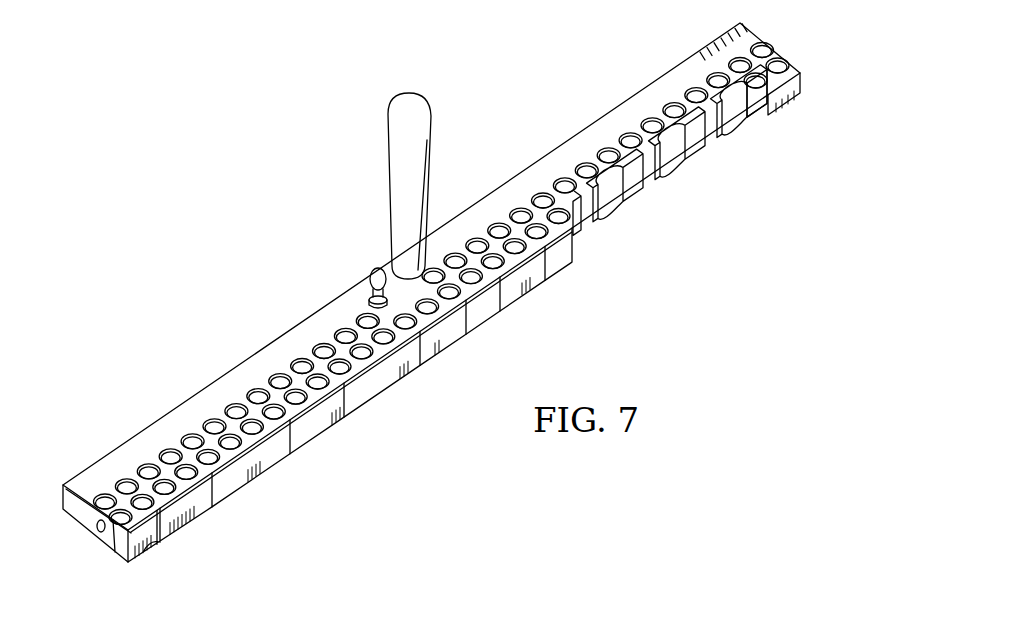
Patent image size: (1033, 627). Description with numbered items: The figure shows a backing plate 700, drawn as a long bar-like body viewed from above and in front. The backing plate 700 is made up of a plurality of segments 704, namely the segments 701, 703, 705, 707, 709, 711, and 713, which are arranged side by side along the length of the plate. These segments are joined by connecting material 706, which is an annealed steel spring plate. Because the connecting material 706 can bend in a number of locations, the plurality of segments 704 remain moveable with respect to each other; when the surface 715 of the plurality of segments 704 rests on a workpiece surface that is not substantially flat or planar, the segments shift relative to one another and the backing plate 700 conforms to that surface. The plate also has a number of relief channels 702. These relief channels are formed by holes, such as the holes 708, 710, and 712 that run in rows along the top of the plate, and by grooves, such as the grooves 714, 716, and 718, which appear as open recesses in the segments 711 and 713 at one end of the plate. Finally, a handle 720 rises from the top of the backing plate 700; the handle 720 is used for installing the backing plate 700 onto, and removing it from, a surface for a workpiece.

The backing plate 700 is at (285, 212).
The segment 701 is at (184, 520).
The number of relief channels 702 is at (252, 378).
The segment 703 is at (255, 468).
The plurality of segments 704 is at (372, 410).
The segment 705 is at (318, 425).
The connecting material 706 is at (168, 416).
The segment 707 is at (423, 360).
The hole 708 is at (488, 247).
The segment 709 is at (482, 312).
The hole 710 is at (533, 252).
The segment 711 is at (690, 150).
The hole 712 is at (665, 118).
The segment 713 is at (785, 98).
The groove 714 is at (745, 125).
The surface 715 is at (505, 300).
The groove 716 is at (633, 200).
The groove 718 is at (577, 247).
The handle 720 is at (400, 92).